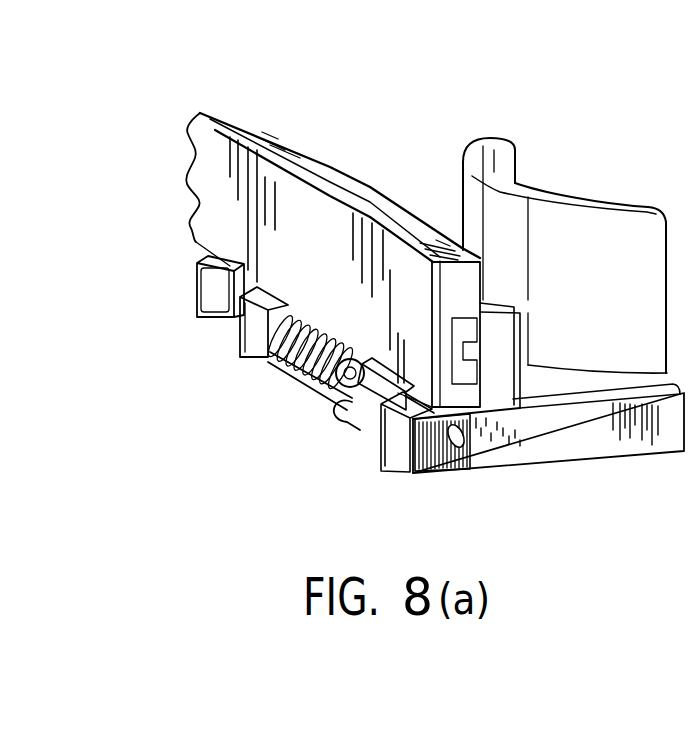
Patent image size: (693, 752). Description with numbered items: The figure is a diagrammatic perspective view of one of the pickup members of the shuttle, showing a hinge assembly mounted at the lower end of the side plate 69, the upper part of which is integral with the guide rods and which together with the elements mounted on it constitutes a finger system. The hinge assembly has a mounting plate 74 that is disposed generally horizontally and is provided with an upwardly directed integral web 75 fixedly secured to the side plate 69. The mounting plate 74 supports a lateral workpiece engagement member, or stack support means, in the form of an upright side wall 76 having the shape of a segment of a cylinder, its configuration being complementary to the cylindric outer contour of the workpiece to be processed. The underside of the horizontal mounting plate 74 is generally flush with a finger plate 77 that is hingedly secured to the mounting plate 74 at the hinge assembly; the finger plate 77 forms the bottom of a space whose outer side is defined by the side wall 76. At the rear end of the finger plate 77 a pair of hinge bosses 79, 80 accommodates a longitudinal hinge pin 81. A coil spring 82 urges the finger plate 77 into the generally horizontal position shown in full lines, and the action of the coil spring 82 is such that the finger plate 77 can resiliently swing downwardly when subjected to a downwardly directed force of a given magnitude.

The side plate 69 is at (330, 268).
The mounting plate 74 is at (532, 445).
The web 75 is at (497, 338).
The side wall 76 is at (509, 160).
The finger plate 77 is at (294, 386).
The hinge boss 79 is at (252, 338).
The hinge boss 80 is at (360, 430).
The hinge pin 81 is at (455, 447).
The coil spring 82 is at (272, 354).